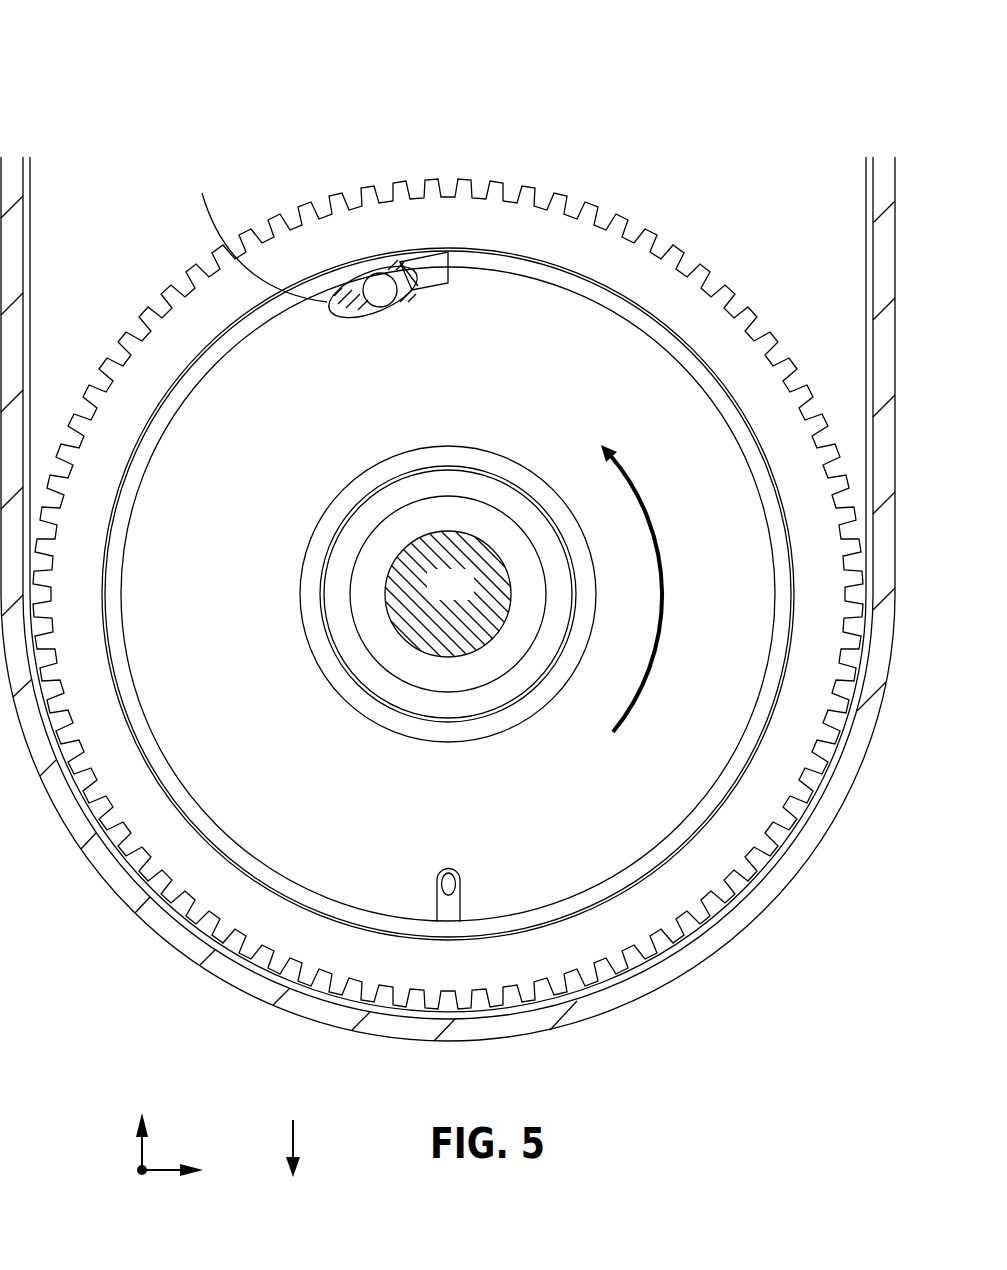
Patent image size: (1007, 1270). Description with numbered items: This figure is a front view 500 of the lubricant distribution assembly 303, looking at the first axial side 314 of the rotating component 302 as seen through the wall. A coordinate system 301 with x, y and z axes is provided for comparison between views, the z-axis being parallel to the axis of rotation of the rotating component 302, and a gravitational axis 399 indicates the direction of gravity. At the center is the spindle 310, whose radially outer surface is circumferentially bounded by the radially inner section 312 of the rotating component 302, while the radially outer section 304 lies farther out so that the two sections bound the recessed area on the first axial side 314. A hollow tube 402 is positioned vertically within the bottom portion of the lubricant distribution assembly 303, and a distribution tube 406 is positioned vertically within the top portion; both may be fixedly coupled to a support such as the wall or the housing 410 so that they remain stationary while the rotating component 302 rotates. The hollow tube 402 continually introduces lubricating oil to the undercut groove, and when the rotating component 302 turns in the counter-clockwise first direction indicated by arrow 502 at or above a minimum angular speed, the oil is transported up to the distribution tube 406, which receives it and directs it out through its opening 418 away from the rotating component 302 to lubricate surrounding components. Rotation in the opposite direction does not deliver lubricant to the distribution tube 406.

The front view 500 is at (126, 73).
The lubricant distribution assembly 303 is at (303, 157).
The rotating component 302 is at (115, 252).
The first axial side 314 is at (101, 332).
The radially outer section 304 is at (176, 418).
The radially inner section 312 is at (352, 542).
The spindle 310 is at (469, 596).
The distribution tube 406 is at (256, 227).
The opening 418 is at (386, 293).
The hollow tube 402 is at (437, 880).
The housing 410 is at (92, 862).
The arrow 502 is at (596, 452).
The coordinate system 301 is at (99, 1120).
The gravitational axis 399 is at (293, 1150).